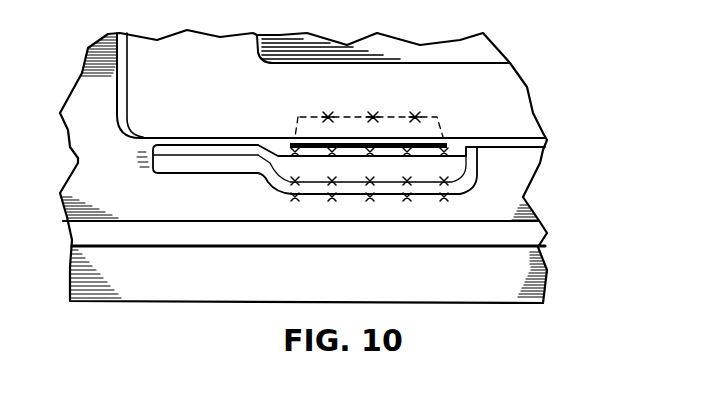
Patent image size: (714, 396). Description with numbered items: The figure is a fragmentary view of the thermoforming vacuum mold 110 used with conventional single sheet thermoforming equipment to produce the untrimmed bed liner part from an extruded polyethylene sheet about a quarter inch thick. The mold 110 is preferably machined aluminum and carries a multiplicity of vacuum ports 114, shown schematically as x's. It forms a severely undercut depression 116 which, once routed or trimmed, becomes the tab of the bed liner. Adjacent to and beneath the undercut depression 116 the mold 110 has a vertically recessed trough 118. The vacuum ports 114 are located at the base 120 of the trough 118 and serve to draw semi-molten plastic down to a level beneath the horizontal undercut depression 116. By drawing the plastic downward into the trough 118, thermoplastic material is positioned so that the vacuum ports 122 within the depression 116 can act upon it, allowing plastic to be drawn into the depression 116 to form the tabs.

The thermoforming vacuum mold 110 is at (540, 192).
The vacuum ports 114 is at (334, 202).
The undercut depression 116 is at (298, 117).
The recessed trough 118 is at (474, 171).
The base of the trough 120 is at (369, 160).
The vacuum ports within the depression 122 is at (416, 115).